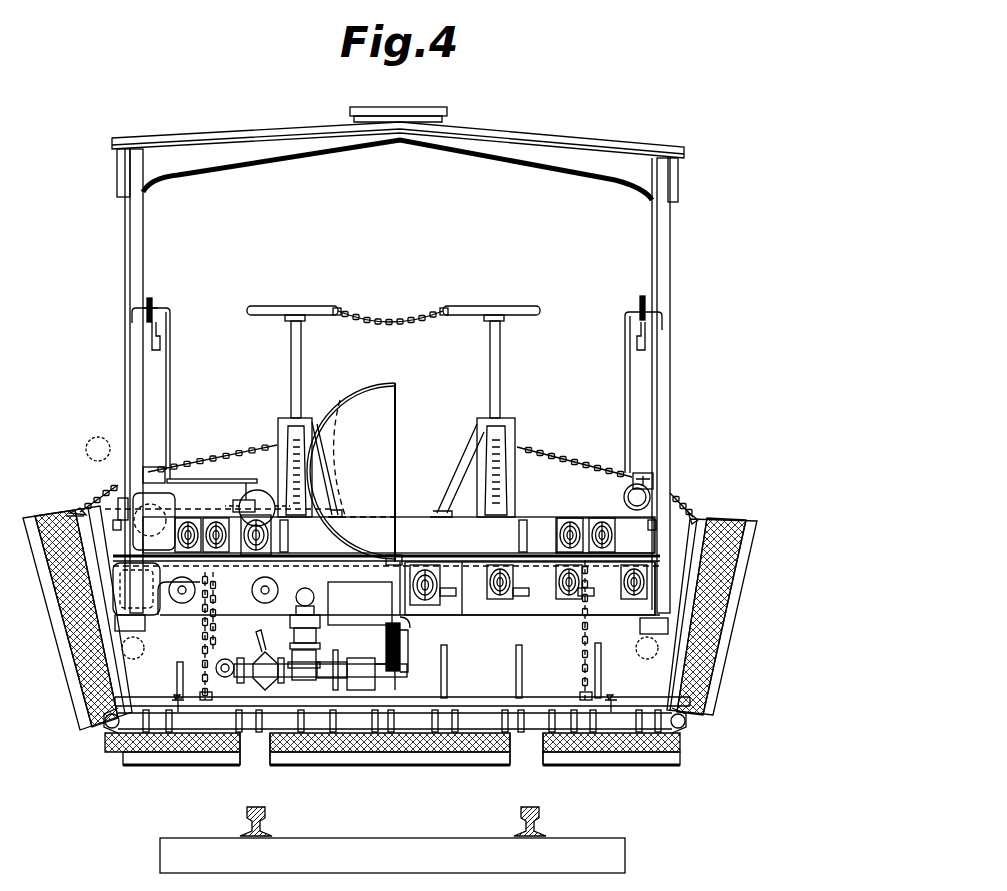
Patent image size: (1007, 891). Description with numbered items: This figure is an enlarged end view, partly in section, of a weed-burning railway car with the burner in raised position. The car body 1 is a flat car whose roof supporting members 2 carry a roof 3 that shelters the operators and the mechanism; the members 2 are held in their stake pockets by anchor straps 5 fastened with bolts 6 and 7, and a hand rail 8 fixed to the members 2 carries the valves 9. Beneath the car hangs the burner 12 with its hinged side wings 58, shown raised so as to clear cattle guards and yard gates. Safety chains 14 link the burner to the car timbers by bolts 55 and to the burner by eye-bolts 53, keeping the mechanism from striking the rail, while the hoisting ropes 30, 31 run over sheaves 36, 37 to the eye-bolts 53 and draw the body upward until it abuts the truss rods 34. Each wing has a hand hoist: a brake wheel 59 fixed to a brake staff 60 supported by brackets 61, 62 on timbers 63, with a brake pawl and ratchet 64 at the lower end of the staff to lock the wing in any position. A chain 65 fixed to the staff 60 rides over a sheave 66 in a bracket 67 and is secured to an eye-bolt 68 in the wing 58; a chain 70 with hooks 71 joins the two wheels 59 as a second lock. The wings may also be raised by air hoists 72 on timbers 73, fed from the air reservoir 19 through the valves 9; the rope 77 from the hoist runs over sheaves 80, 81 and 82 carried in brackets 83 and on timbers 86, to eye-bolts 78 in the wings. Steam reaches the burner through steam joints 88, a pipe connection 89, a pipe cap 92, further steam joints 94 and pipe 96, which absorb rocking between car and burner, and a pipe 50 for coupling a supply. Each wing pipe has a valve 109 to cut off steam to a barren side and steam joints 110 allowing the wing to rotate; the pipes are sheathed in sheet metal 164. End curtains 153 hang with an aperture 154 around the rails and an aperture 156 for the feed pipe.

The car body 1 is at (462, 562).
The roof supporting members 2 is at (128, 243).
The roof 3 is at (604, 148).
The anchor straps 5 is at (105, 496).
The bolt 6 is at (113, 530).
The bolt 7 is at (391, 637).
The hand rail 8 is at (158, 340).
The valves 9 is at (152, 312).
The burner 12 is at (352, 755).
The safety chains 14 is at (200, 626).
The air reservoir 19 is at (354, 474).
The hoisting rope 30 is at (578, 648).
The hoisting rope 31 is at (196, 648).
The truss rods 34 is at (514, 660).
The sheave 36 is at (580, 517).
The sheave 37 is at (200, 512).
The pipe 50 is at (222, 670).
The eye-bolts 53 is at (196, 693).
The bolts 55 is at (550, 588).
The side wings 58 is at (55, 655).
The brake wheel 59 is at (262, 306).
The brake staff 60 is at (301, 352).
The bracket 61 is at (280, 430).
The bracket 62 is at (330, 404).
The timbers 63 is at (380, 531).
The brake pawl and ratchet 64 is at (288, 512).
The hand hoist chain 65 is at (216, 458).
The sheave 66 is at (625, 489).
The bracket 67 is at (150, 467).
The eye-bolt 68 is at (695, 515).
The chain 70 is at (394, 320).
The hooks 71 is at (340, 310).
The air hoists 72 is at (258, 490).
The timbers 73 is at (330, 550).
The rope 77 is at (82, 508).
The eye-bolts 78 is at (74, 513).
The sheave 80 is at (110, 486).
The sheave 81 is at (185, 478).
The sheaves 82 is at (240, 498).
The brackets 83 is at (182, 470).
The timbers 86 is at (168, 600).
The steam joints 88 is at (258, 648).
The pipe connection 89 is at (268, 666).
The pipe cap 92 is at (318, 602).
The steam joints 94 is at (320, 630).
The pipe 96 is at (401, 652).
The valve 109 is at (178, 732).
The steam joints 110 is at (104, 728).
The end curtains 153 is at (45, 575).
The aperture 154 is at (258, 752).
The aperture 156 is at (122, 752).
The sheet metal 164 is at (395, 721).